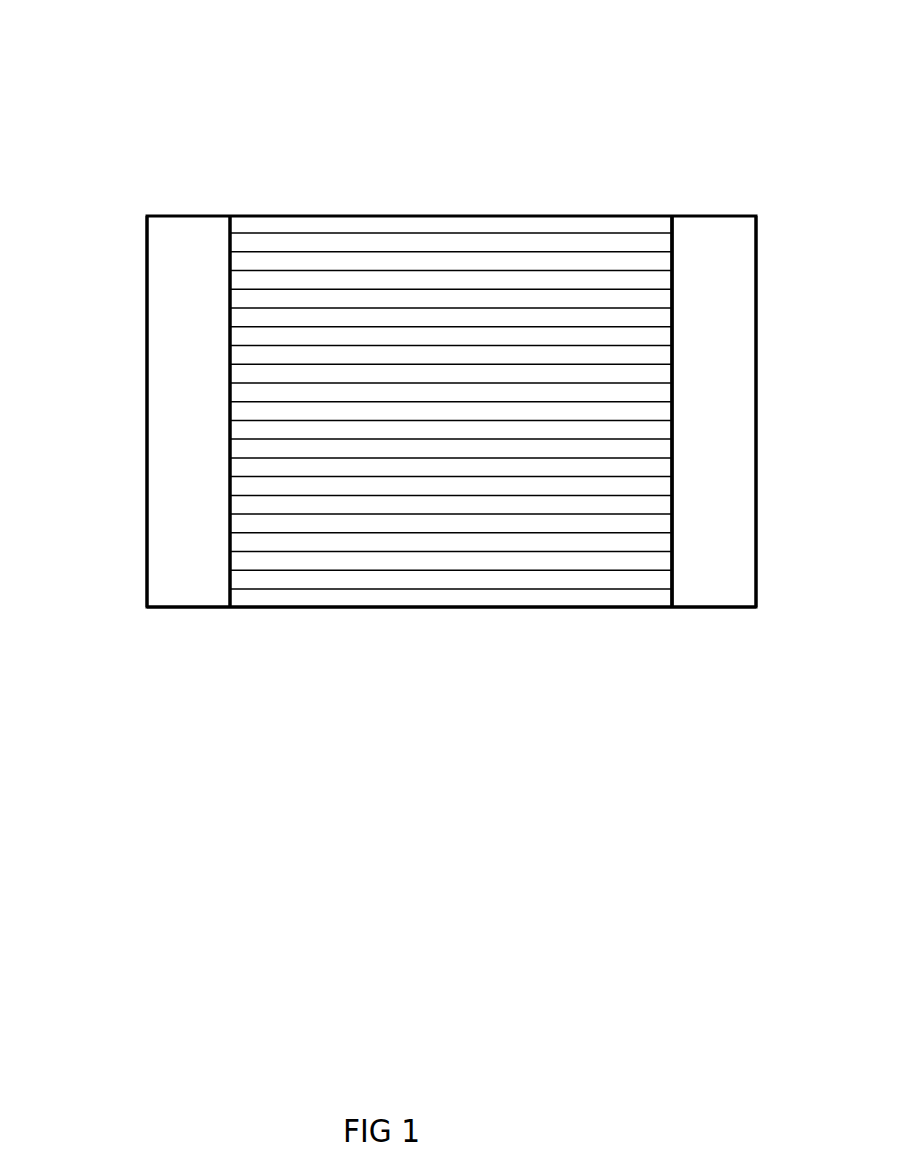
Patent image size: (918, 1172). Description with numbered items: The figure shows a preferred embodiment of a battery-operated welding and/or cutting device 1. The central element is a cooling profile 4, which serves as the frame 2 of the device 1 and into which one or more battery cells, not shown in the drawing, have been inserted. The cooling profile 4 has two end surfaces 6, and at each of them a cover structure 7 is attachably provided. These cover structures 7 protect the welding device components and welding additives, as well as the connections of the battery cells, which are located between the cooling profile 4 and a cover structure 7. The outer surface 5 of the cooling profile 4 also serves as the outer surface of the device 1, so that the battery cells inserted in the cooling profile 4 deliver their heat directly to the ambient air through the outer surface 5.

The battery-operated welding and/or cutting device 1 is at (286, 141).
The frame 2 is at (280, 608).
The cooling profile 4 is at (588, 350).
The outer surface 5 is at (566, 529).
The end surfaces 6 is at (672, 264).
The cover structure 7 is at (167, 402).